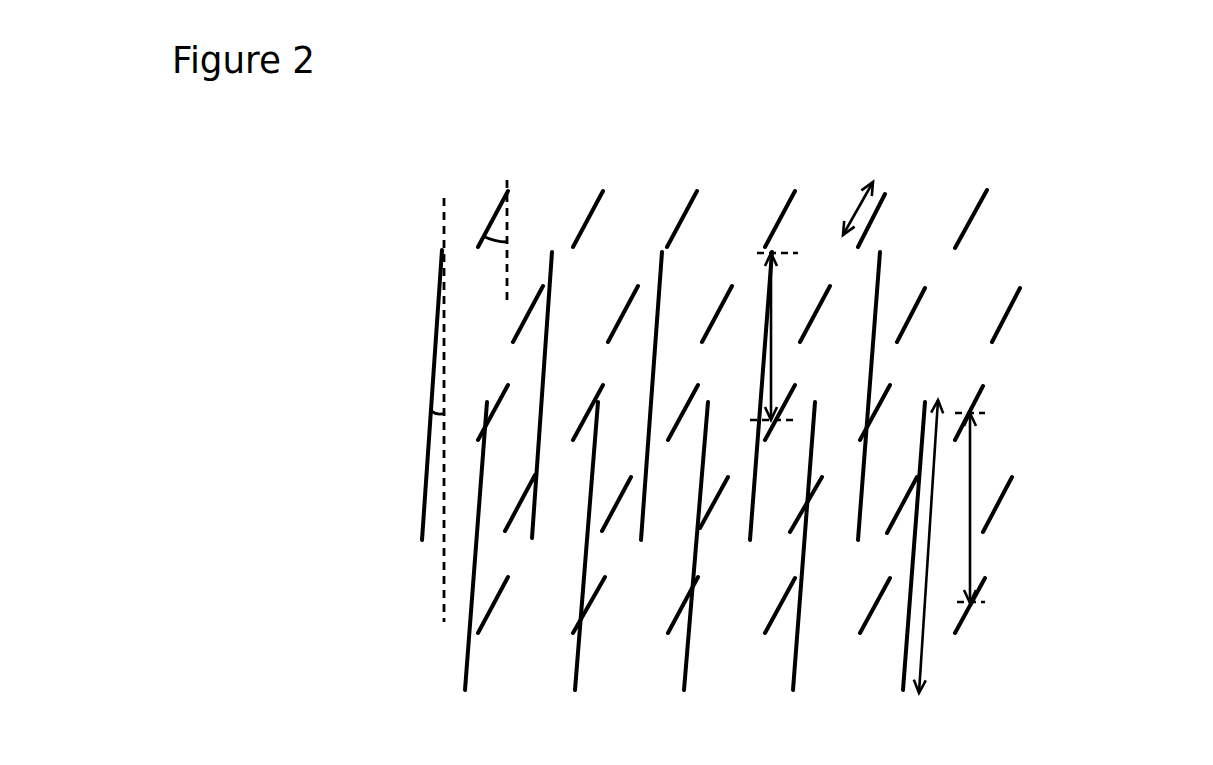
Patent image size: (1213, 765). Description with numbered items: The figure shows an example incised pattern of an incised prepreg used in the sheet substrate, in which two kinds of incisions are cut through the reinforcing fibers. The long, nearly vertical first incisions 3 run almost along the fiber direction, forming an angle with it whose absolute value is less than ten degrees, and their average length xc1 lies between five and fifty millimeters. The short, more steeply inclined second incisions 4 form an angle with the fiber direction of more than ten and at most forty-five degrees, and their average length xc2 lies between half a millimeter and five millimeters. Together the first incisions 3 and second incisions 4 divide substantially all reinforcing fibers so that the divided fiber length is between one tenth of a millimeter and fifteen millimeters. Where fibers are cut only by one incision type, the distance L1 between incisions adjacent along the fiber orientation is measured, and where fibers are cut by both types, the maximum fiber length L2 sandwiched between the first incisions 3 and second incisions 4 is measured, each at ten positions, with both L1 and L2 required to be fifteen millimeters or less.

The incision 1 3 is at (435, 348).
The incision 2 4 is at (502, 593).
The distance between adjacent incisions L1 is at (971, 468).
The maximum length of reinforcing fibers between incisions 1 and 2 L2 is at (772, 370).
The average length of incisions 1 xc1 is at (923, 663).
The average length of incisions 2 xc2 is at (877, 202).